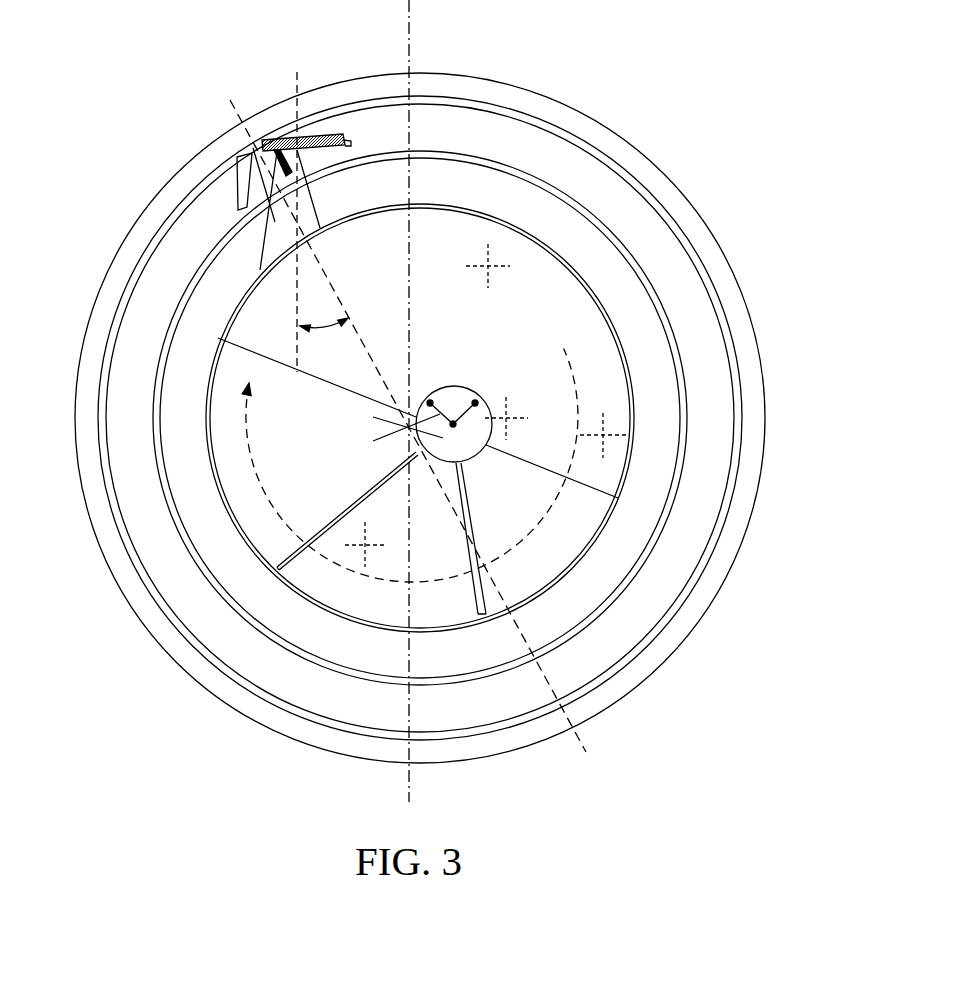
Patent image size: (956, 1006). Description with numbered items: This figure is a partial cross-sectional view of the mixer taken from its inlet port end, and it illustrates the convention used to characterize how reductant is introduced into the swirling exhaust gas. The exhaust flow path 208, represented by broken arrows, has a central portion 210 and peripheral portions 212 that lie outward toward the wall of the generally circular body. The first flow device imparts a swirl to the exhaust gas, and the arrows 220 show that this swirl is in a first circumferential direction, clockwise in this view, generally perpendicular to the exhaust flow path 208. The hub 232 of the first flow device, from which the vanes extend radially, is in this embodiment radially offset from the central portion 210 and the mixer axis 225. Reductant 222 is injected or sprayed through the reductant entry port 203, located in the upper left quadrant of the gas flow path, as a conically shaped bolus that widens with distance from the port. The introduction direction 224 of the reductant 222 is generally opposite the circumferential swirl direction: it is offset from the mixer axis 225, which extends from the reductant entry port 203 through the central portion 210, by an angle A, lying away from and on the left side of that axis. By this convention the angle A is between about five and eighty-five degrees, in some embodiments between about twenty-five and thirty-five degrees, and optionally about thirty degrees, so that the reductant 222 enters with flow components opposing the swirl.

The reductant entry port 203 is at (290, 228).
The reductant 222 is at (287, 238).
The introduction direction 224 is at (297, 312).
The mixer axis 225 is at (410, 777).
The central portion 210 is at (369, 432).
The central hub 232 is at (452, 420).
The exhaust flow path 208 is at (487, 268).
The arrows 220 is at (497, 557).
The peripheral portions 212 is at (392, 562).
The angle A is at (327, 328).